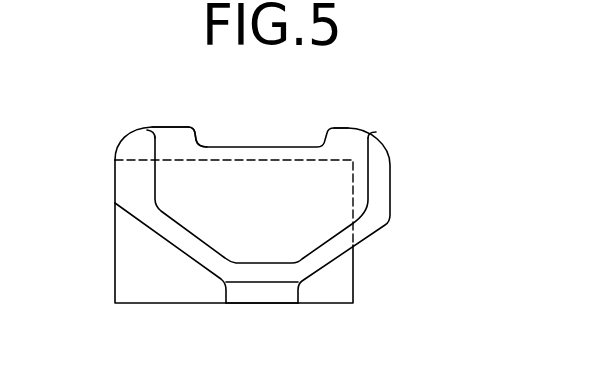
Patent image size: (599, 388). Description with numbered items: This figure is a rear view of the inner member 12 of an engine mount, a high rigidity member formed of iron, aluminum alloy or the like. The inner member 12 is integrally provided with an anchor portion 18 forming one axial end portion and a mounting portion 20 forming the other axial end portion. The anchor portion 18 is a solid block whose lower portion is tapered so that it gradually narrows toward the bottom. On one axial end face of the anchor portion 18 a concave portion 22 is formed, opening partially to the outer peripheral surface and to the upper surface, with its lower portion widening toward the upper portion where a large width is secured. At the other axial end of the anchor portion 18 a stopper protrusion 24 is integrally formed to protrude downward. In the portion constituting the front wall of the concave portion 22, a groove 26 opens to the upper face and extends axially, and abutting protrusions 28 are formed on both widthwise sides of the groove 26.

The inner member 12 is at (420, 148).
The anchor portion 18 is at (140, 183).
The mounting portion 20 is at (145, 267).
The concave portion 22 is at (175, 218).
The stopper protrusion 24 is at (285, 292).
The groove 26 is at (198, 139).
The abutting protrusions 28 is at (177, 138).